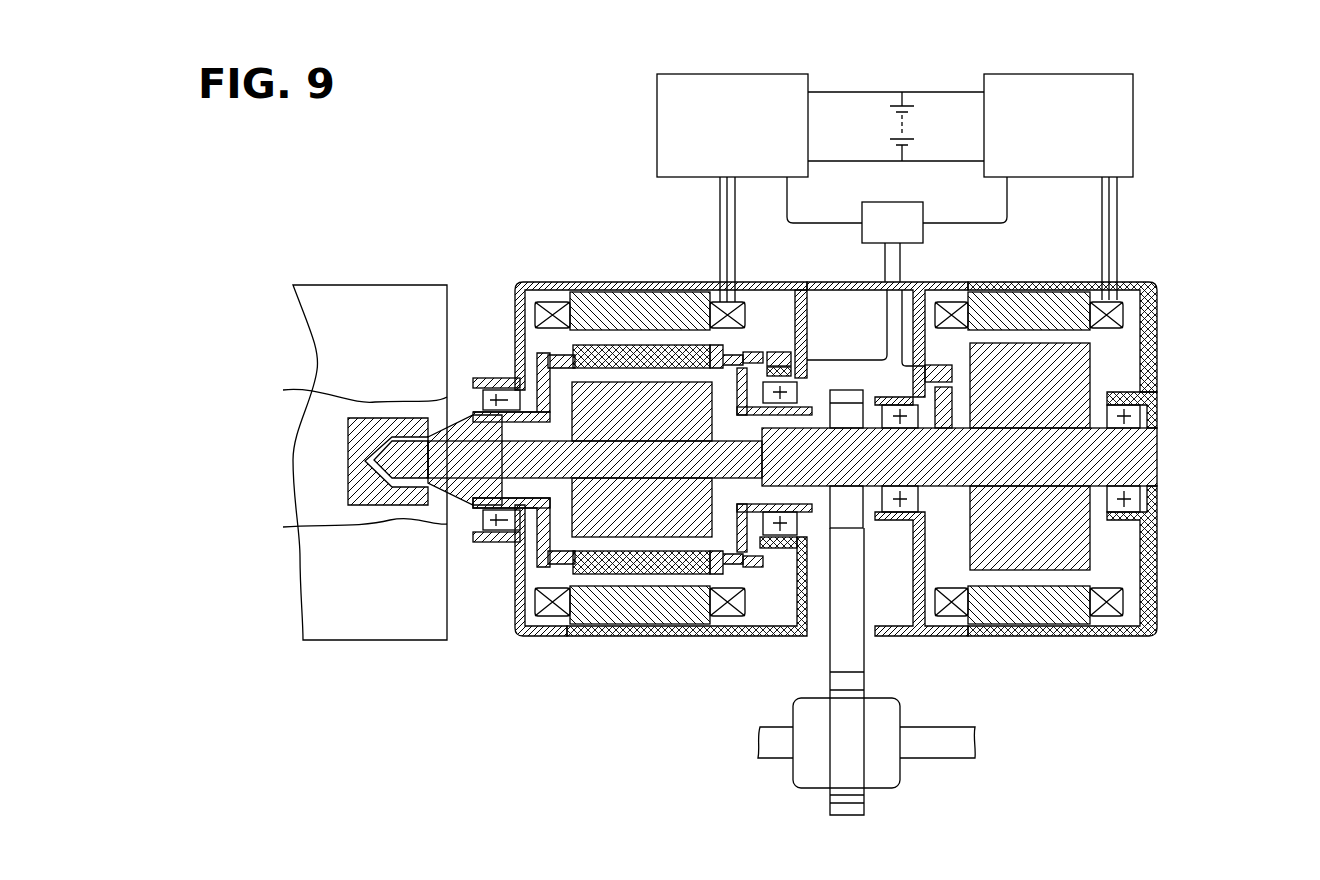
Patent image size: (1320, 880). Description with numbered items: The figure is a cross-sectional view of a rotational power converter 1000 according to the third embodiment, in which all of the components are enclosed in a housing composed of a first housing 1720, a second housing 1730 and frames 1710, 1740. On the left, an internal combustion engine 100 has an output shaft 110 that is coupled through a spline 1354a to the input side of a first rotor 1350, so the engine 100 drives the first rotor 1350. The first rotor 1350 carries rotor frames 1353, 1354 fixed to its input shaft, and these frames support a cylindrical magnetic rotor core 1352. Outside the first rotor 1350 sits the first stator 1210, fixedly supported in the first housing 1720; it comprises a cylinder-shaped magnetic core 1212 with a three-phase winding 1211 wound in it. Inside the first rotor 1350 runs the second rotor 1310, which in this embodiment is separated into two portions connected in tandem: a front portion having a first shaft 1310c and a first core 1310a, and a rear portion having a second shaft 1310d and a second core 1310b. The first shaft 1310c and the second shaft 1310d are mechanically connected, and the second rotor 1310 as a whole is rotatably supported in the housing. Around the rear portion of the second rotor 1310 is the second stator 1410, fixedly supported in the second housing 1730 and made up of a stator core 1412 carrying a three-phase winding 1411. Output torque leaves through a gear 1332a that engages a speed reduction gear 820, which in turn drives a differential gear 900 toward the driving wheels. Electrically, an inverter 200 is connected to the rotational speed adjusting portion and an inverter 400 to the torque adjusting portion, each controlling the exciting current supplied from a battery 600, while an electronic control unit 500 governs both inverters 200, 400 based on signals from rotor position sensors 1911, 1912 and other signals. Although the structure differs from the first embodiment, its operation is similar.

The internal combustion engine 100 is at (348, 612).
The output shaft of the engine 110 is at (365, 418).
The inverter 200 is at (725, 73).
The inverter 400 is at (1053, 73).
The electronic control unit 500 is at (923, 231).
The battery 600 is at (885, 118).
The speed reduction gear 820 is at (855, 647).
The differential gear 900 is at (913, 770).
The rotational power converter 1000 is at (537, 244).
The first stator 1210 is at (640, 525).
The three-phase winding 1211 is at (555, 613).
The magnetic core 1212 is at (660, 620).
The second rotor 1310 is at (848, 462).
The first core 1310a is at (570, 510).
The second core 1310b is at (1070, 550).
The first shaft 1310c is at (553, 480).
The second shaft 1310d is at (1120, 470).
The gear 1332a is at (832, 506).
The first rotor 1350 is at (642, 402).
The magnetic rotor core 1352 is at (650, 347).
The rotor frame 1353 is at (750, 352).
The rotor frame 1354 is at (515, 622).
The spline 1354a is at (407, 486).
The second stator 1410 is at (1052, 515).
The three-phase winding 1411 is at (1123, 623).
The stator core 1412 is at (1048, 625).
The frame 1710 is at (720, 632).
The first housing 1720 is at (540, 635).
The second housing 1730 is at (1100, 625).
The frame 1740 is at (962, 630).
The rotor position sensor 1911 is at (785, 358).
The rotor position sensor 1912 is at (938, 365).